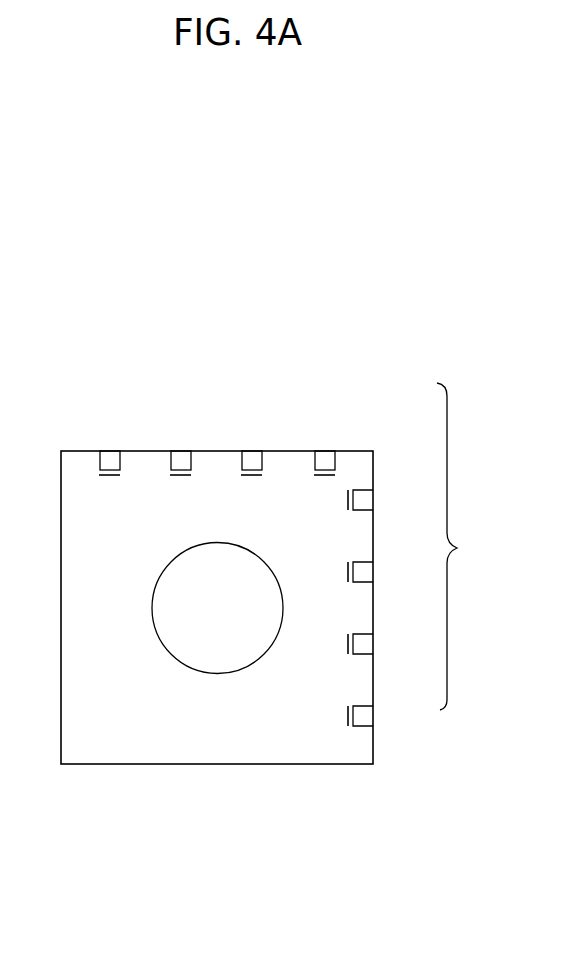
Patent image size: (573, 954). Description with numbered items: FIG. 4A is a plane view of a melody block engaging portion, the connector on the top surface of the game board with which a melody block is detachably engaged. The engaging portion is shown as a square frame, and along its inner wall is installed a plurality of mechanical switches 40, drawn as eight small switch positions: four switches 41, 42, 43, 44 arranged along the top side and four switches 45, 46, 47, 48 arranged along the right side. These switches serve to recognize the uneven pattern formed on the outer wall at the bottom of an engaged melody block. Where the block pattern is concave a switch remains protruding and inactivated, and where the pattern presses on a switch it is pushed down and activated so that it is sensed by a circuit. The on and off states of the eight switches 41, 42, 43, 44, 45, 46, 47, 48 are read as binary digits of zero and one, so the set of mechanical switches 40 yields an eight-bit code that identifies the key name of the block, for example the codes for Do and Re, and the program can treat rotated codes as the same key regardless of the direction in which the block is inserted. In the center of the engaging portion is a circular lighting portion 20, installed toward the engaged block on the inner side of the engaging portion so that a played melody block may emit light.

The lighting portion 20 is at (216, 656).
The mechanical switches 40 is at (461, 546).
The mechanical switch 41 is at (108, 458).
The mechanical switch 42 is at (180, 458).
The mechanical switch 43 is at (252, 458).
The mechanical switch 44 is at (330, 462).
The mechanical switch 45 is at (366, 500).
The mechanical switch 46 is at (366, 572).
The mechanical switch 47 is at (366, 644).
The mechanical switch 48 is at (366, 716).